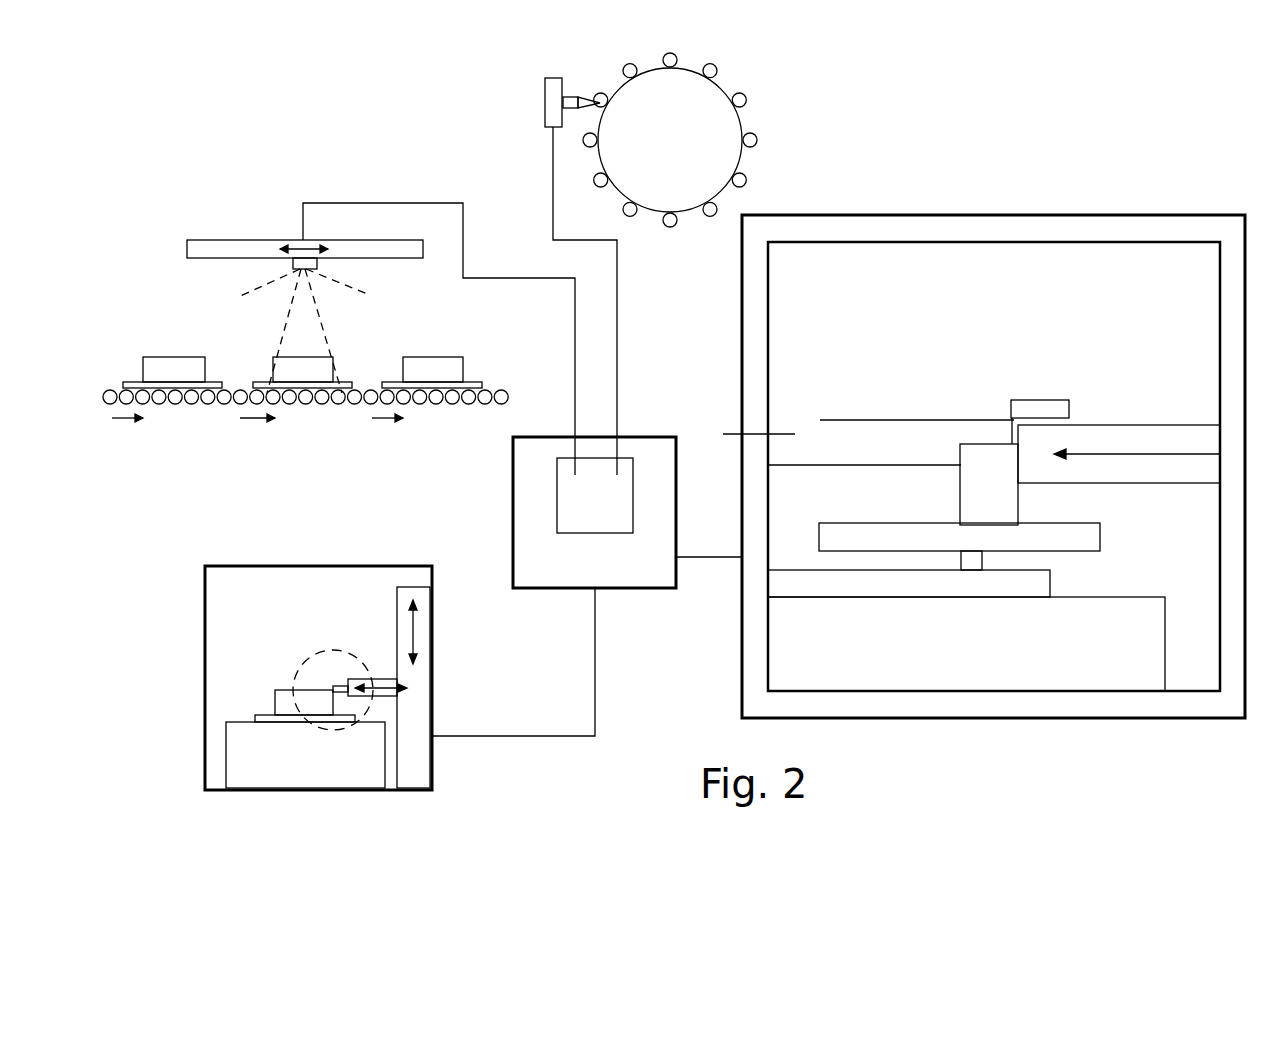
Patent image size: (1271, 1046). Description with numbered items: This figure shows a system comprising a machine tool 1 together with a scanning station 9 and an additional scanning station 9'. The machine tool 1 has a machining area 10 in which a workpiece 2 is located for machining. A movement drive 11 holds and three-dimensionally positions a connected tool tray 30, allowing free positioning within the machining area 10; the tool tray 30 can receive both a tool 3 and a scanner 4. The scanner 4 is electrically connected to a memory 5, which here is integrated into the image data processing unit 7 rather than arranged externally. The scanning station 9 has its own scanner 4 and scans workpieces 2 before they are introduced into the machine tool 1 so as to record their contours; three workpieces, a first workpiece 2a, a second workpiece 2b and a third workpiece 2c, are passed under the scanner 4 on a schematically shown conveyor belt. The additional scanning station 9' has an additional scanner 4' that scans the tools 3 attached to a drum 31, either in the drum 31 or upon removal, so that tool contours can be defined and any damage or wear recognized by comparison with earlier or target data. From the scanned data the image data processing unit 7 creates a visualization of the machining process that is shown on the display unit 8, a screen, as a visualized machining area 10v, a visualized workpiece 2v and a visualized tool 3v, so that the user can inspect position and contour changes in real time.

The machine tool 1 is at (218, 546).
The workpiece 2 is at (290, 706).
The first workpiece 2a is at (428, 368).
The second workpiece 2b is at (302, 368).
The third workpiece 2c is at (172, 368).
The visualized workpiece 2v is at (957, 494).
The tool 3 is at (345, 657).
The visualized tool 3v is at (1031, 410).
The scanner 4 is at (297, 284).
The additional scanner 4' is at (521, 90).
The memory 5 is at (583, 502).
The image data processing unit 7 is at (657, 458).
The display unit 8 is at (1158, 165).
The scanning station 9 is at (381, 281).
The additional scanning station 9' is at (489, 267).
The machining area 10 is at (217, 652).
The visualized machining area 10v is at (926, 261).
The movement drive 11 is at (420, 760).
The tool tray 30 is at (382, 680).
The drum 31 is at (720, 120).